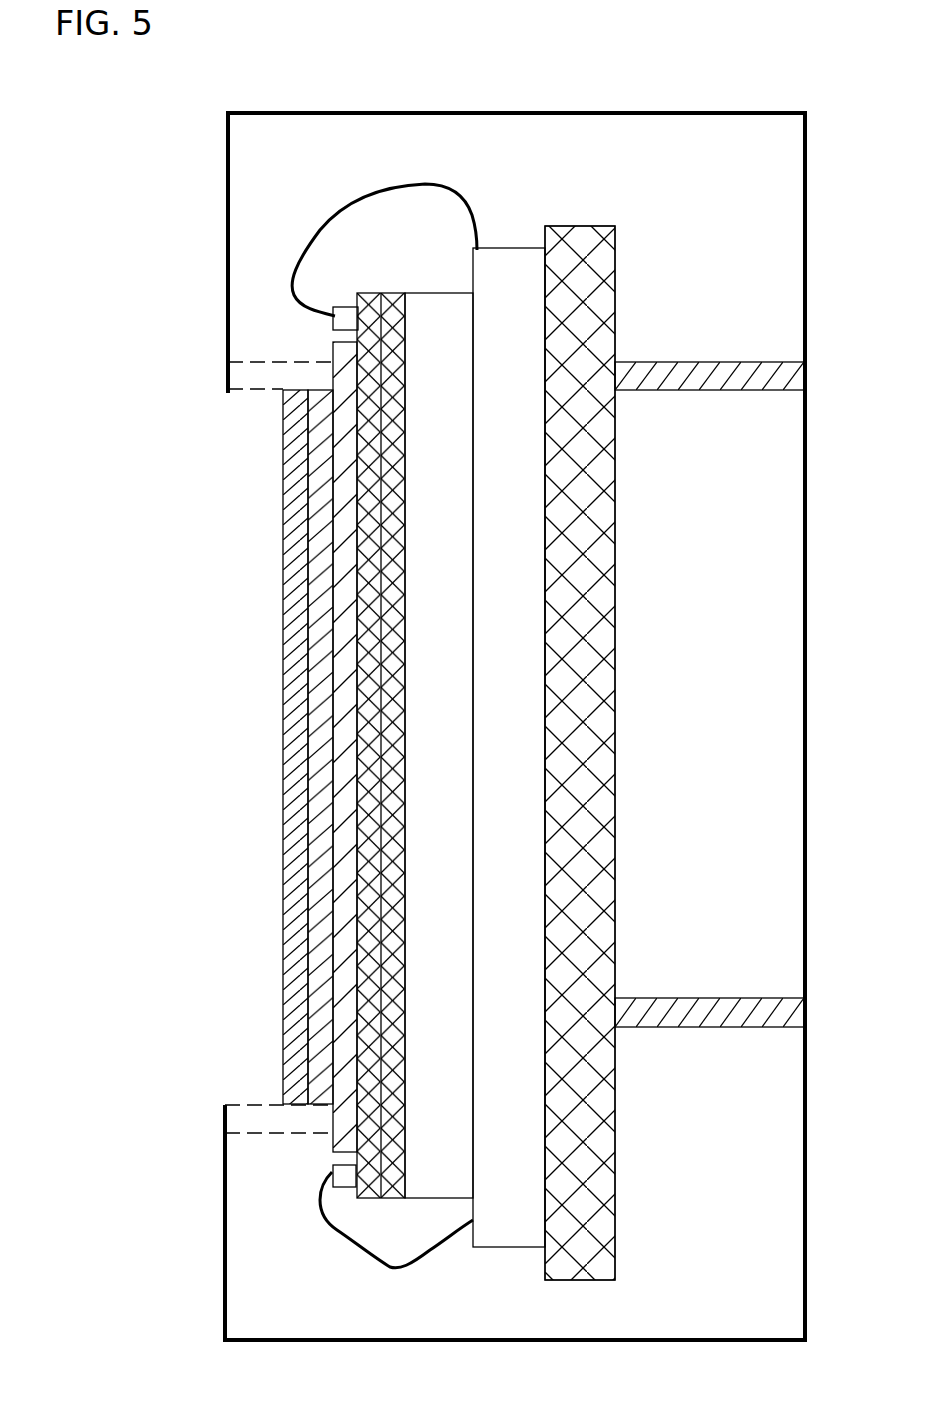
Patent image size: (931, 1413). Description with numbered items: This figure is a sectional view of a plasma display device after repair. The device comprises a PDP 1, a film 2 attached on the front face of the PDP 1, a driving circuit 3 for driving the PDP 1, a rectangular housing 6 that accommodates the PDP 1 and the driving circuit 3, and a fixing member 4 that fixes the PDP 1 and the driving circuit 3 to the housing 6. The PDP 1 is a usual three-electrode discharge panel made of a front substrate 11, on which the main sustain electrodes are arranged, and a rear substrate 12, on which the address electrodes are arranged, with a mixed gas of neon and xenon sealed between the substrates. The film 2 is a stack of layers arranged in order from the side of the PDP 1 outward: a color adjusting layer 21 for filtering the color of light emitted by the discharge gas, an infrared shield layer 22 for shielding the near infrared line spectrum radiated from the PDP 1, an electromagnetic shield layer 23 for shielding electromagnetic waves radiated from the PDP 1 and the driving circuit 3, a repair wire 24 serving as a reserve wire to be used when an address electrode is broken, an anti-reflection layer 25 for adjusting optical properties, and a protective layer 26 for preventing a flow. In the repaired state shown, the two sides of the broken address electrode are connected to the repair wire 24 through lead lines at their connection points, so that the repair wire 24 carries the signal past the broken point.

The PDP 1 is at (506, 201).
The film 2 is at (397, 172).
The driving circuit 3 is at (615, 922).
The fixing member 4 is at (718, 385).
The housing 6 is at (227, 222).
The front substrate 11 is at (438, 313).
The rear substrate 12 is at (518, 1243).
The color adjusting layer 21 is at (387, 1193).
The infrared shield layer 22 is at (360, 293).
The electromagnetic shield layer 23 is at (338, 365).
The repair wire 24 is at (335, 1167).
The anti-reflection layer 25 is at (314, 1103).
The protective layer 26 is at (292, 407).